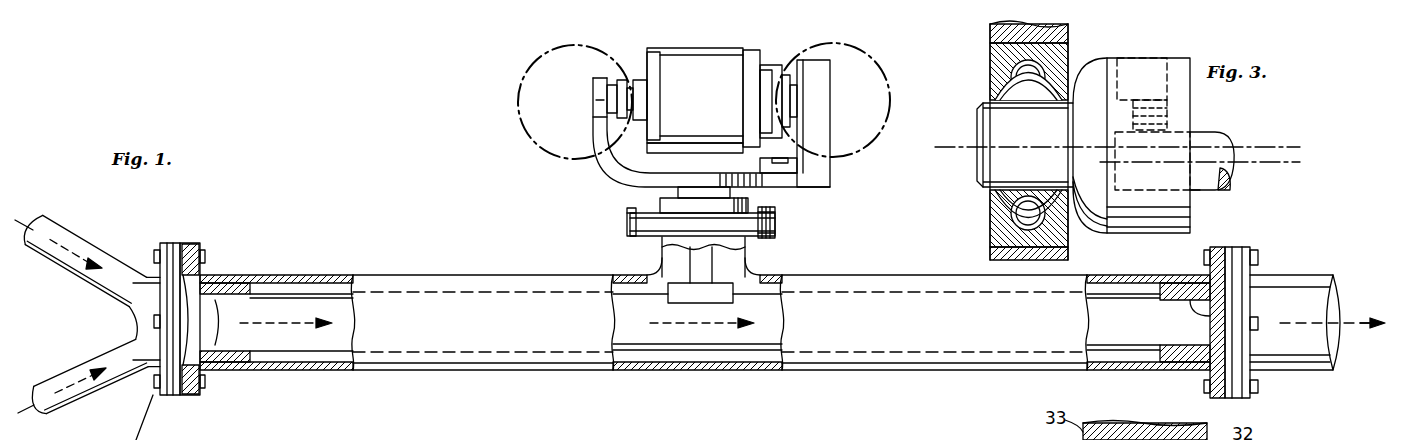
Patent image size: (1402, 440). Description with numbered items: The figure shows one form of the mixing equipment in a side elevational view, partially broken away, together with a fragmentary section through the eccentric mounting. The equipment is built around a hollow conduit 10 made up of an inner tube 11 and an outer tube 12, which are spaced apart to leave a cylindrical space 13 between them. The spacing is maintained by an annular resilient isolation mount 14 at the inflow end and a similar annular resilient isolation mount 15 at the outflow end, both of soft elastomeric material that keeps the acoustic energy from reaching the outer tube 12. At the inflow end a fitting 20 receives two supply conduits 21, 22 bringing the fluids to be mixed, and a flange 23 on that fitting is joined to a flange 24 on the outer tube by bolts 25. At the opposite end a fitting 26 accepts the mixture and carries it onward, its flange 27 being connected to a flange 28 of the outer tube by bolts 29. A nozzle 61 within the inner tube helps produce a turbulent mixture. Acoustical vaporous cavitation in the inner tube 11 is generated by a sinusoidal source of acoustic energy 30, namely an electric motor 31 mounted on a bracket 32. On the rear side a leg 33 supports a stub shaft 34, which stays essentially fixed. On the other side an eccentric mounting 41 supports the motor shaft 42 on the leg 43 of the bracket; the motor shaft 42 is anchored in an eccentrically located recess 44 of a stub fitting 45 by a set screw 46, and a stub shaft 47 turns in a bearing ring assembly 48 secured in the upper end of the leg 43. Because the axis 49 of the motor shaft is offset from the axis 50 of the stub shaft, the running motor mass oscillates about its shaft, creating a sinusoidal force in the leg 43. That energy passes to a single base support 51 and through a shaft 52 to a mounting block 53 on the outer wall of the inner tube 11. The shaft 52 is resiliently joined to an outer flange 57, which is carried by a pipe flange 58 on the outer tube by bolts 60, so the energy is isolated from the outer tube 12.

In FIG. 1, the hollow conduit 10 is at (502, 258).
In FIG. 1, the inner tube 11 is at (293, 340).
In FIG. 1, the outer tube 12 is at (296, 275).
In FIG. 1, the cylindrical space 13 is at (348, 280).
In FIG. 1, the annular resilient isolation mount 14 is at (208, 282).
In FIG. 1, the annular resilient isolation mount 15 is at (1180, 283).
In FIG. 1, the fitting 20 is at (138, 320).
In FIG. 1, the supply conduit 21 is at (55, 228).
In FIG. 1, the supply conduit 22 is at (62, 415).
In FIG. 1, the flange 23 is at (168, 396).
In FIG. 1, the flange 24 is at (190, 396).
In FIG. 1, the bolts 25 is at (155, 252).
In FIG. 1, the fitting 26 is at (1295, 288).
In FIG. 1, the flange 27 is at (1242, 396).
In FIG. 1, the flange 28 is at (1215, 396).
In FIG. 1, the bolts 29 is at (1258, 257).
In FIG. 1, the sinusoidal source of acoustic energy 30 is at (774, 40).
In FIG. 1, the electric motor 31 is at (690, 52).
In FIG. 1, the bracket 32 is at (826, 186).
In FIG. 1, the leg 33 is at (825, 68).
In FIG. 1, the stub shaft 34 is at (796, 100).
In FIG. 1, the eccentric mounting 41 is at (590, 58).
In FIG. 3, the eccentric mounting 41 is at (1150, 46).
In FIG. 1, the motor shaft 42 is at (648, 97).
In FIG. 3, the motor shaft 42 is at (1215, 140).
In FIG. 1, the leg 43 is at (603, 160).
In FIG. 3, the leg 43 is at (1000, 32).
In FIG. 3, the eccentrically located recess 44 is at (1198, 188).
In FIG. 3, the stub fitting 45 is at (1185, 97).
In FIG. 3, the set screw 46 is at (1117, 62).
In FIG. 3, the stub shaft 47 is at (1000, 163).
In FIG. 3, the bearing ring assembly 48 is at (1005, 68).
In FIG. 3, the axis 49 is at (1290, 162).
In FIG. 3, the axis 50 is at (1300, 145).
In FIG. 1, the base support 51 is at (660, 187).
In FIG. 1, the shaft 52 is at (748, 256).
In FIG. 1, the mounting block 53 is at (678, 290).
In FIG. 1, the outer flange 57 is at (775, 235).
In FIG. 1, the pipe flange 58 is at (640, 236).
In FIG. 1, the bolts 60 is at (628, 215).
In FIG. 1, the nozzle 61 is at (222, 330).